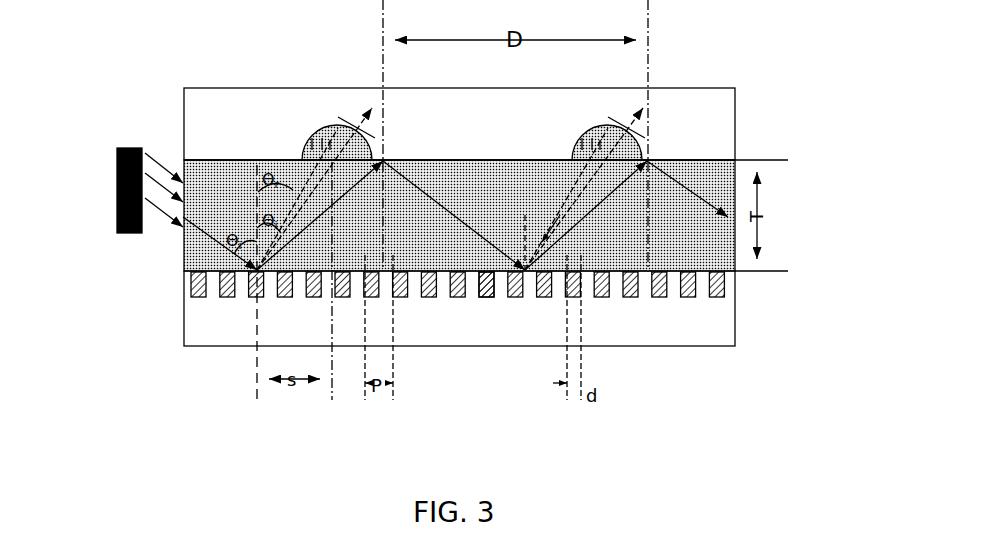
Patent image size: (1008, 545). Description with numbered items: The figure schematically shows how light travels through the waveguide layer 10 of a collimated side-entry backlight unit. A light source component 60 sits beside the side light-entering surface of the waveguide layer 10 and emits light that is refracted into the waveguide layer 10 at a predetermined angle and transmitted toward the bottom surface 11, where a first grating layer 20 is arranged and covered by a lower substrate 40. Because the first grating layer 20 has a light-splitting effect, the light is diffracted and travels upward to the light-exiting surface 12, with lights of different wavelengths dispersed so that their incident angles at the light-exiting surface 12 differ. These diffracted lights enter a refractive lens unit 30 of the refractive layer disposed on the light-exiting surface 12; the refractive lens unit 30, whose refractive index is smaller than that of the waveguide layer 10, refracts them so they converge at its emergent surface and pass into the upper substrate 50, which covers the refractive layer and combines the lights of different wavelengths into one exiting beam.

The waveguide layer 10 is at (712, 187).
The bottom surface 11 is at (470, 284).
The light-exiting surface 12 is at (464, 160).
The first grating layer 20 is at (727, 283).
The refractive lens unit 30 is at (648, 159).
The lower substrate 40 is at (735, 307).
The upper substrate 50 is at (707, 123).
The light source component 60 is at (118, 193).